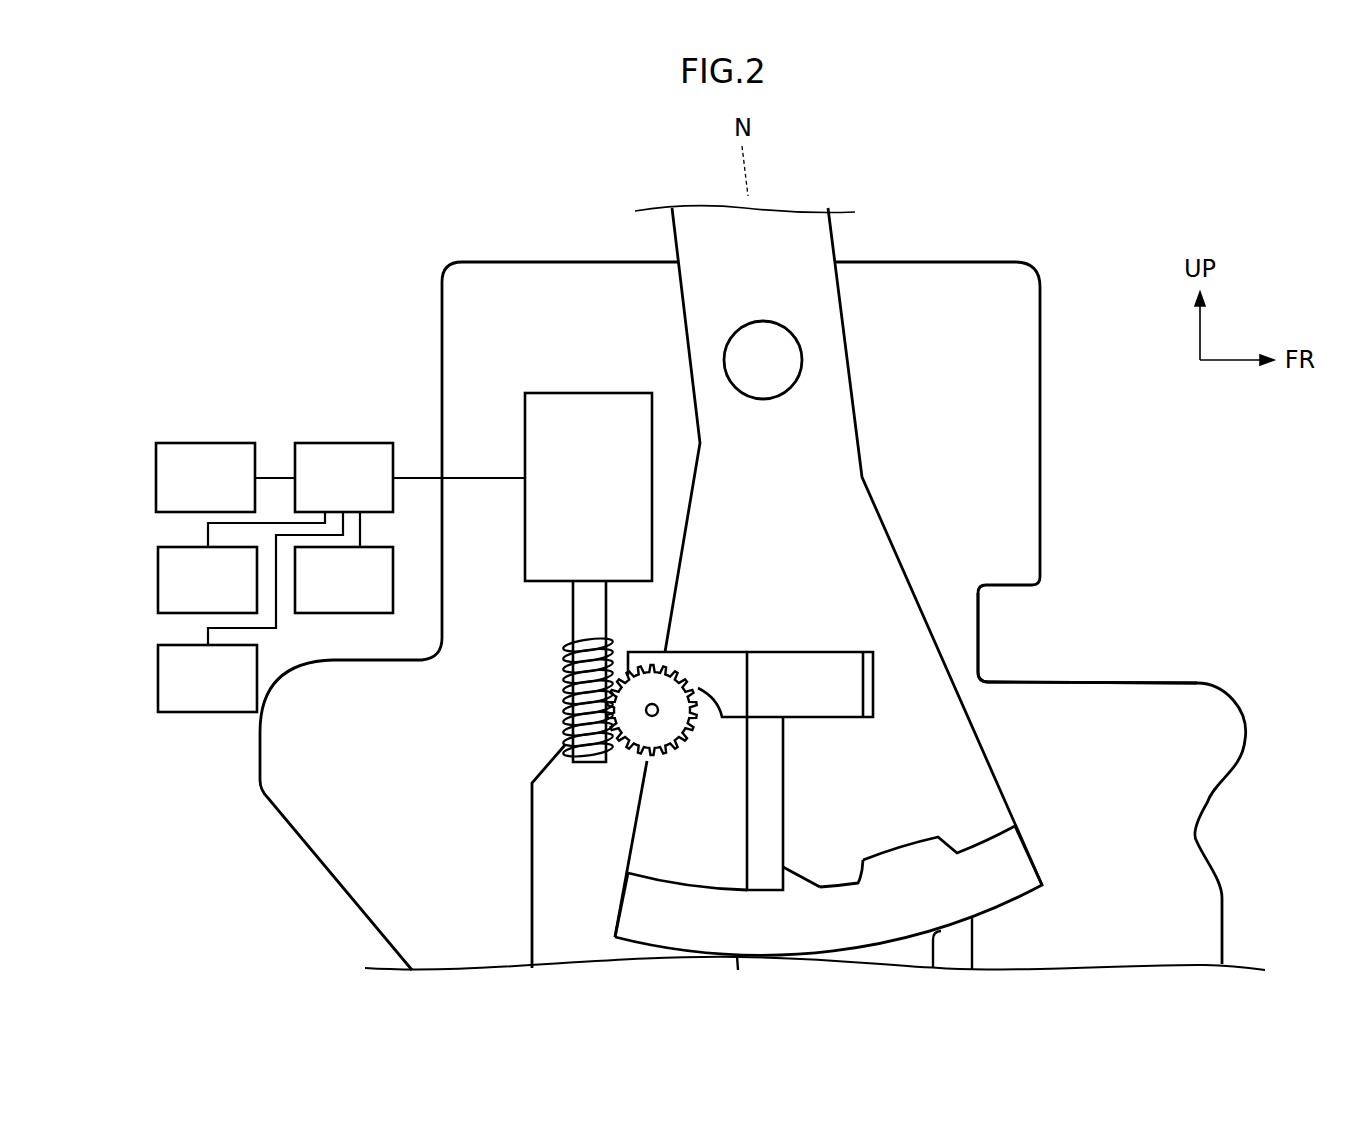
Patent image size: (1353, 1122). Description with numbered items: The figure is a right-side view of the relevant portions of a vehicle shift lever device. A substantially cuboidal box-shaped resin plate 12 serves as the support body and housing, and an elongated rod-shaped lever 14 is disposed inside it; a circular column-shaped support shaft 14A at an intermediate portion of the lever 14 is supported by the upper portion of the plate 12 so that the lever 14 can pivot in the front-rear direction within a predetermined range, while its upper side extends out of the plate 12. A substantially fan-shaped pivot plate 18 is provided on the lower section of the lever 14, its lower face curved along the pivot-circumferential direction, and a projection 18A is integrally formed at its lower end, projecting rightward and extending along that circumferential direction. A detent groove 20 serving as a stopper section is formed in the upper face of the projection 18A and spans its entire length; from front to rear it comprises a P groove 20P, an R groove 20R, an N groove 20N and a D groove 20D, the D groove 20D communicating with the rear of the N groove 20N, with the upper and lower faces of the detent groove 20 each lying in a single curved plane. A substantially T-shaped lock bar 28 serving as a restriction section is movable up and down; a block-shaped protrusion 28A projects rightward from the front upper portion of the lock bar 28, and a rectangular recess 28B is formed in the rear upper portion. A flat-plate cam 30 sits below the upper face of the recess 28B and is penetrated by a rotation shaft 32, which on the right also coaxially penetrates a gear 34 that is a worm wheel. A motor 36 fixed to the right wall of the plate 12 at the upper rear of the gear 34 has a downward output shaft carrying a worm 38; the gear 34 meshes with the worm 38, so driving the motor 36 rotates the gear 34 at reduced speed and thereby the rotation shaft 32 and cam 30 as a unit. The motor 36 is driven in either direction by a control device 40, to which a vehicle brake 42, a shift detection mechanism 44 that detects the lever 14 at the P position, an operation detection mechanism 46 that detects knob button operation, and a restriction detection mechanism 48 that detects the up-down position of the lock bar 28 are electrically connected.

The plate 12 is at (455, 262).
The lever 14 is at (670, 237).
The support shaft 14A is at (803, 360).
The pivot plate 18 is at (963, 707).
The projection 18A is at (1027, 853).
The detent groove 20 is at (645, 873).
The D groove 20D is at (702, 884).
The N groove 20N is at (767, 887).
The R groove 20R is at (832, 884).
The P groove 20P is at (987, 837).
The lock bar 28 is at (785, 732).
The protrusion 28A is at (820, 650).
The recess 28B is at (710, 690).
The cam 30 is at (632, 760).
The rotation shaft 32 is at (659, 711).
The gear 34 is at (673, 742).
The motor 36 is at (587, 393).
The worm 38 is at (562, 700).
The control device 40 is at (343, 443).
The brake 42 is at (210, 443).
The shift detection mechanism 44 is at (340, 613).
The operation detection mechanism 46 is at (158, 597).
The restriction detection mechanism 48 is at (158, 699).